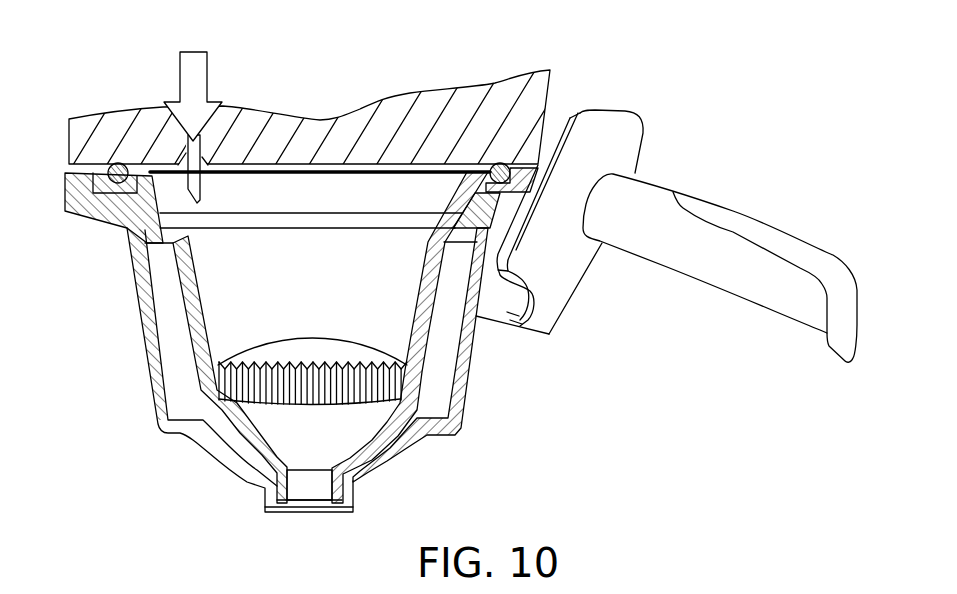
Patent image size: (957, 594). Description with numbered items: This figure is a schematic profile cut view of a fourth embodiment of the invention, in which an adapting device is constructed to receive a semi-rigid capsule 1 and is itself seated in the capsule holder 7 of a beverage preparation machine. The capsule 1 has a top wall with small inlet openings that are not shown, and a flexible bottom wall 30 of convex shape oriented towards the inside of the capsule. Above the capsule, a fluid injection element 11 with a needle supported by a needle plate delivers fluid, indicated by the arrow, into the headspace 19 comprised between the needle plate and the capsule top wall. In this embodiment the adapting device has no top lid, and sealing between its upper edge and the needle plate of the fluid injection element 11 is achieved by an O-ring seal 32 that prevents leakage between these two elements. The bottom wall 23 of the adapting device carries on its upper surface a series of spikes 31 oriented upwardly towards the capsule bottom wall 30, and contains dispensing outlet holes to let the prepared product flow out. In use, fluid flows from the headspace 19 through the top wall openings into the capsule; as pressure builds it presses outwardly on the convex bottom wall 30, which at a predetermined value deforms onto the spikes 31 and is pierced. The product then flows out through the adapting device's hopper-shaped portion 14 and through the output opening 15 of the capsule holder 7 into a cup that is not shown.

The capsule 1 is at (330, 375).
The capsule holder 7 is at (634, 143).
The fluid injection element 11 is at (441, 105).
The hopper-shaped portion 14 is at (350, 440).
The output opening 15 is at (313, 524).
The headspace 19 is at (321, 193).
The bottom wall 23 is at (287, 403).
The bottom wall 30 is at (270, 333).
The spikes 31 is at (346, 356).
The O-ring seal 32 is at (117, 160).